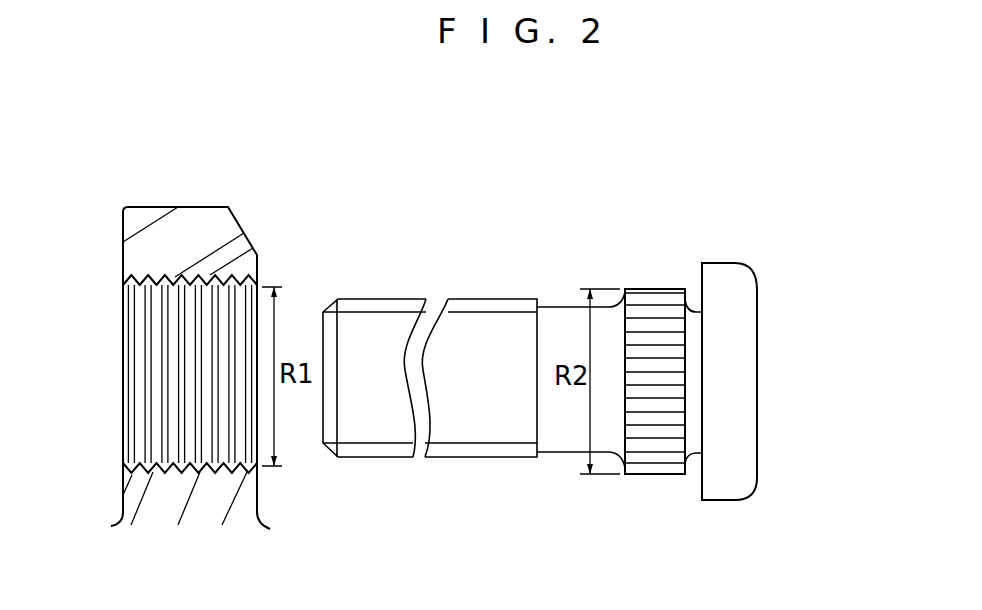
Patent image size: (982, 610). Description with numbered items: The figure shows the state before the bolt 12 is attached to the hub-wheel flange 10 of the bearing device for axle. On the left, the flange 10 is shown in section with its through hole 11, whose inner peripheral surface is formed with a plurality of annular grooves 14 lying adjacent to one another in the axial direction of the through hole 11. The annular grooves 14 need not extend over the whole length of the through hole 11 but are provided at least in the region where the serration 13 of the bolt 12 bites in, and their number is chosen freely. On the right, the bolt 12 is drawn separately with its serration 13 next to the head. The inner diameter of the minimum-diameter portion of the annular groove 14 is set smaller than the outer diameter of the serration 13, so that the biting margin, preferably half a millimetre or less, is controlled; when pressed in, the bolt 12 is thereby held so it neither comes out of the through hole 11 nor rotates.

The flange 10 is at (170, 203).
The through hole 11 is at (143, 342).
The bolt 12 is at (763, 272).
The serration 13 is at (651, 296).
The annular grooves 14 is at (220, 278).